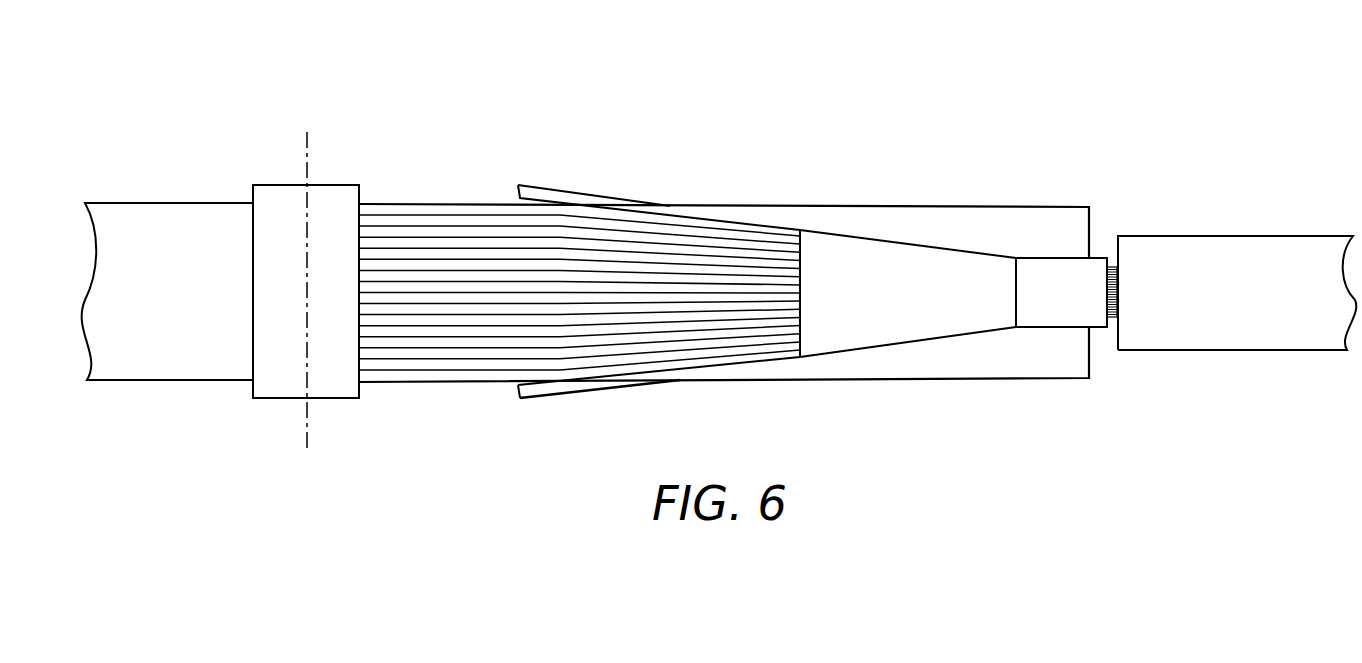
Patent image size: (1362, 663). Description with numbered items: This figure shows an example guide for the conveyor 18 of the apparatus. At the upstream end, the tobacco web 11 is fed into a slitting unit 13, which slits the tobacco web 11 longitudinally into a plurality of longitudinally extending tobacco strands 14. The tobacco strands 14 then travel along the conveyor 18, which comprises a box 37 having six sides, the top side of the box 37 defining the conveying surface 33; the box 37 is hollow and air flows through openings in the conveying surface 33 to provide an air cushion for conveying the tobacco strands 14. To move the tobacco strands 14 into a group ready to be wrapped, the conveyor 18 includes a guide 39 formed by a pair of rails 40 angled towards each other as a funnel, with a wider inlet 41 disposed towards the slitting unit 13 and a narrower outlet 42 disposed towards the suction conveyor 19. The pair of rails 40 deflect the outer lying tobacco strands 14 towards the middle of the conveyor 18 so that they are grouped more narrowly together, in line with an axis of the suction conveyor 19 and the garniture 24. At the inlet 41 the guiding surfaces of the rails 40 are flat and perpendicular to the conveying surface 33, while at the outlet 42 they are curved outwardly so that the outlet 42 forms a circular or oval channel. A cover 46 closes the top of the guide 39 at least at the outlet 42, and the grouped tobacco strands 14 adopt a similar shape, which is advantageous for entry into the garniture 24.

The conveyor 18 is at (852, 104).
The tobacco web 11 is at (158, 203).
The slitting unit 13 is at (344, 186).
The tobacco strands 14 is at (432, 204).
The guide 39 is at (546, 192).
The pair of rails 40 is at (733, 218).
The inlet 41 is at (510, 392).
The cover 46 is at (908, 262).
The box 37 is at (1061, 237).
The conveying surface 33 is at (1037, 207).
The outlet 42 is at (1109, 340).
The suction conveyor 19 is at (1237, 264).
The garniture 24 is at (1230, 236).